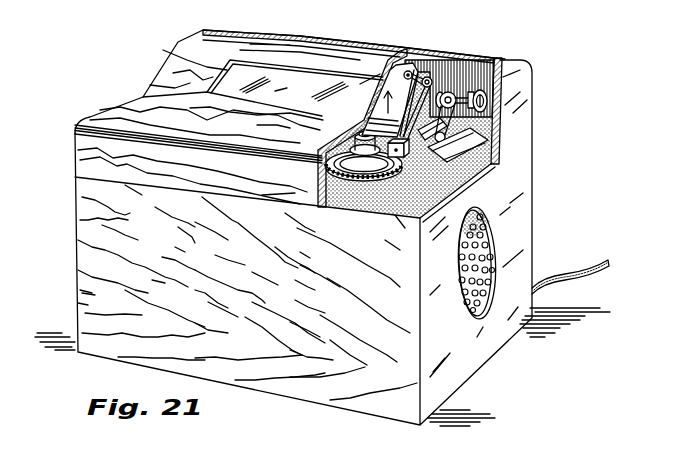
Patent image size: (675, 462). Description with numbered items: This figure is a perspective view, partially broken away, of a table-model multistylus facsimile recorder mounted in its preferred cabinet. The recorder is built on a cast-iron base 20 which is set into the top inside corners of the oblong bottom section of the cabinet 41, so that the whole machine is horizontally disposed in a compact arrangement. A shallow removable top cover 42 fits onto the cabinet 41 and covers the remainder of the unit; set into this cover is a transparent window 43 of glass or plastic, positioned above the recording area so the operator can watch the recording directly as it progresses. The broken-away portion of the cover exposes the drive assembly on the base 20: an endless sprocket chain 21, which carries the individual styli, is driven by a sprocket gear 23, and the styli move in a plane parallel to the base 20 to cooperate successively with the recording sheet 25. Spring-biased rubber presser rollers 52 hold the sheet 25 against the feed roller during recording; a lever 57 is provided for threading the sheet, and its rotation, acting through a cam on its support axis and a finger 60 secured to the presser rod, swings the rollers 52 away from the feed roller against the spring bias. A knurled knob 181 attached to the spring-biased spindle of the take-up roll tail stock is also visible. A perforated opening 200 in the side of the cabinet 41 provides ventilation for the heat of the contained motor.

The cast-iron base 20 is at (402, 186).
The endless belt or sprocket chain 21 is at (318, 168).
The sprocket gear 23 is at (324, 143).
The recording sheet 25 is at (290, 86).
The bottom section of the cabinet 41 is at (364, 407).
The removable cover 42 is at (523, 76).
The transparent window 43 is at (295, 80).
The rubber rollers 52 is at (411, 62).
The lever 57 is at (462, 160).
The finger 60 is at (457, 118).
The knurled knob 181 is at (474, 101).
The perforated opening 200 is at (482, 243).